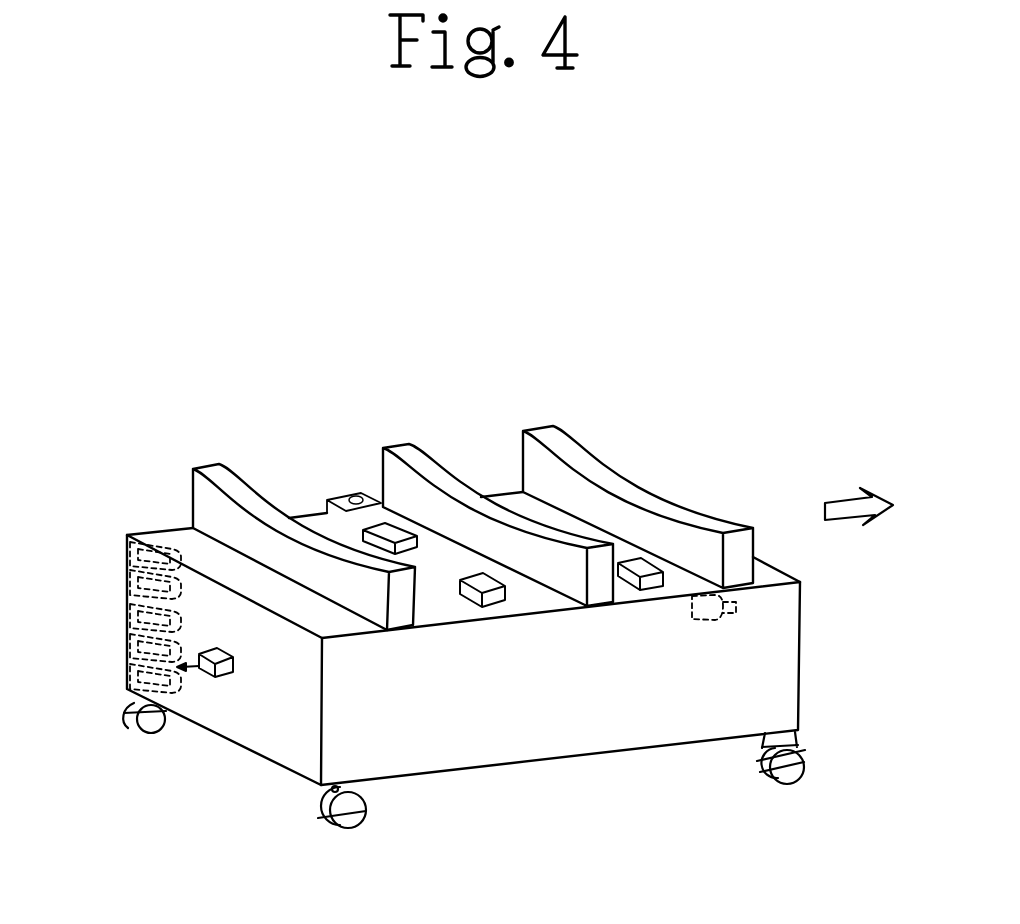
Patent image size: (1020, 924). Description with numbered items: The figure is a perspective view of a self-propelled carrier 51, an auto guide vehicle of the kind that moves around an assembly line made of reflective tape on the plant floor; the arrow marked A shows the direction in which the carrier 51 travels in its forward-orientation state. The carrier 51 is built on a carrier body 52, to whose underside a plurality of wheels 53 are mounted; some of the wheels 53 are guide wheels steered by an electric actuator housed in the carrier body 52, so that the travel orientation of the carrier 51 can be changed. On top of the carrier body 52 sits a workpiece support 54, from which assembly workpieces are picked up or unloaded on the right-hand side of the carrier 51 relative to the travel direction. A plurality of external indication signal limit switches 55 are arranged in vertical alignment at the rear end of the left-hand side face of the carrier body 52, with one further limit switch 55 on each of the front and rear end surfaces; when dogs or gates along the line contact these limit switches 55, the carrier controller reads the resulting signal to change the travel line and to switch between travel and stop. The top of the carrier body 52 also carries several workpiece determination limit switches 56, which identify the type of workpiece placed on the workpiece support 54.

The self-propelled carrier 51 is at (146, 398).
The carrier body 52 is at (233, 718).
The wheels 53 is at (142, 725).
The workpiece support 54 is at (245, 482).
The external indication signal limit switches 55 is at (122, 672).
The workpiece determination limit switches 56 is at (467, 598).